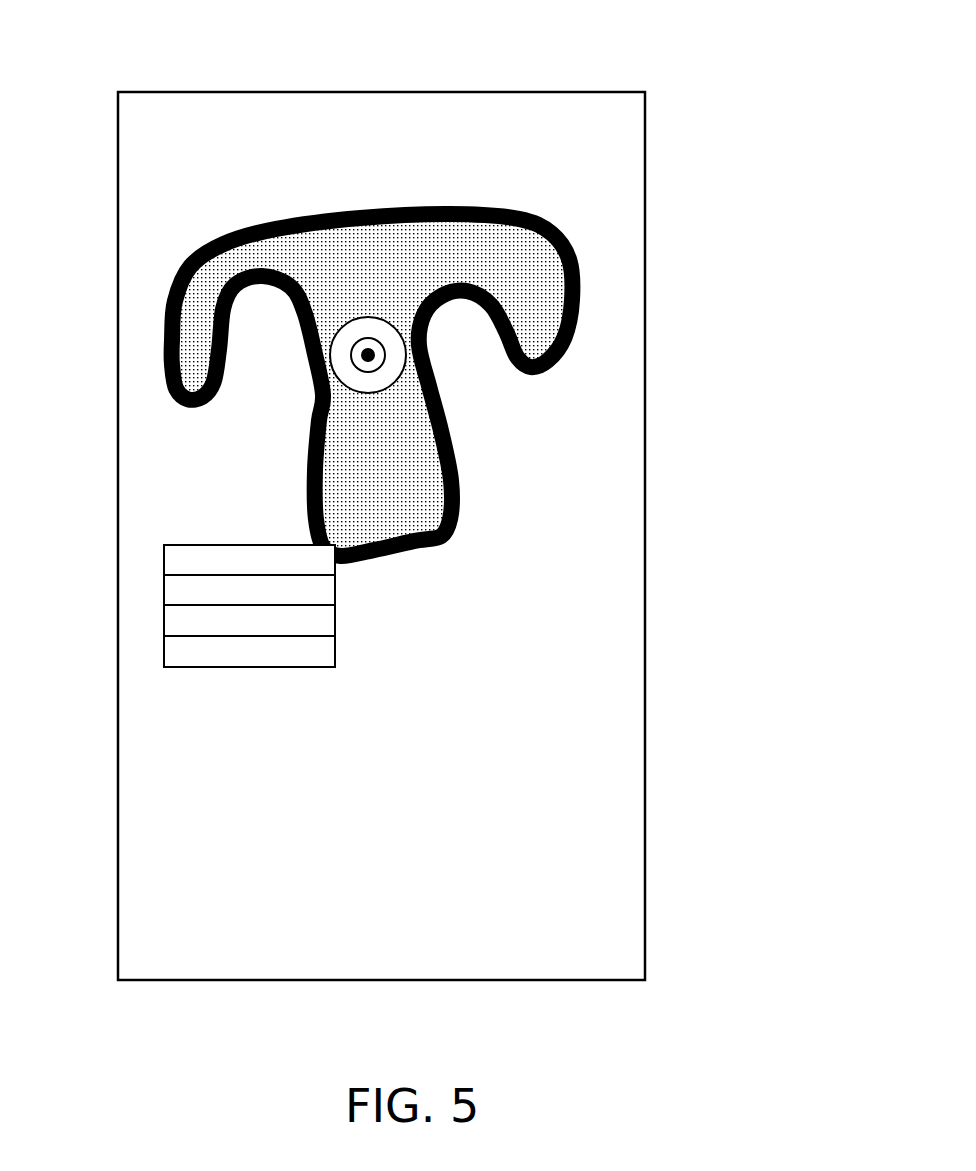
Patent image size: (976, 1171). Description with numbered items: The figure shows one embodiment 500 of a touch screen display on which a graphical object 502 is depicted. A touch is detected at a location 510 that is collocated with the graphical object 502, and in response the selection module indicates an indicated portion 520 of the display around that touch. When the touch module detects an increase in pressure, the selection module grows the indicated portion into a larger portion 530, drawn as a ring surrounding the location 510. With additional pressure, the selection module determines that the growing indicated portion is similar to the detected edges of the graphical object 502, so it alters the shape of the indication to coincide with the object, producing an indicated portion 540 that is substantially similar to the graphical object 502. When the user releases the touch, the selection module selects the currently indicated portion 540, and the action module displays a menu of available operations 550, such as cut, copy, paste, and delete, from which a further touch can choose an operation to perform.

The embodiment of a touch screen display 500 is at (138, 44).
The graphical object 502 is at (463, 373).
The location 510 is at (373, 357).
The indicated portion 520 is at (351, 378).
The larger portion 530 is at (324, 372).
The indicated portion substantially similar to the graphical object 540 is at (439, 547).
The menu of available operations 550 is at (313, 677).